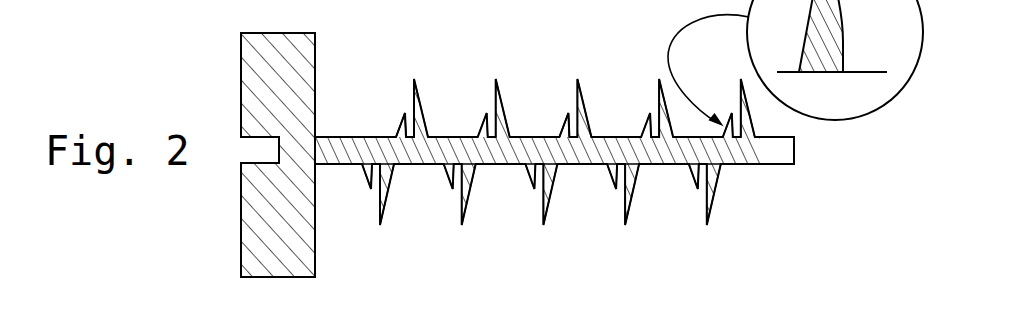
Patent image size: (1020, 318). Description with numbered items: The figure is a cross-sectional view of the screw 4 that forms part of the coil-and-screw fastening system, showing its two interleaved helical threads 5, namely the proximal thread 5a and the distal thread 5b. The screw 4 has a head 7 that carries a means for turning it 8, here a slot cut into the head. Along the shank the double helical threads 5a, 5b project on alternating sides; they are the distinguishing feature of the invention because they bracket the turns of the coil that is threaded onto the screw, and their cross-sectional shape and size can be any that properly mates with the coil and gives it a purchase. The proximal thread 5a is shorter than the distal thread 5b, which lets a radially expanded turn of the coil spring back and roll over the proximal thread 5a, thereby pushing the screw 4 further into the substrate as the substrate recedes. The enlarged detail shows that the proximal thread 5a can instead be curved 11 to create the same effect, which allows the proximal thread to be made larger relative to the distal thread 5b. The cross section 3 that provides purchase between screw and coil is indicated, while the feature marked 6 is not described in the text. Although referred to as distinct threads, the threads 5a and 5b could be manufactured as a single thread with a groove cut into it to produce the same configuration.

The cross section 3 is at (554, 241).
The screw 4 is at (770, 198).
The barbs 5 is at (414, 68).
The proximal thread 5a is at (471, 99).
The distal thread 5b is at (485, 200).
The barb row 6 is at (562, 68).
The head 7 is at (342, 229).
The means for turning 8 is at (224, 159).
The curved proximal thread 11 is at (857, 11).